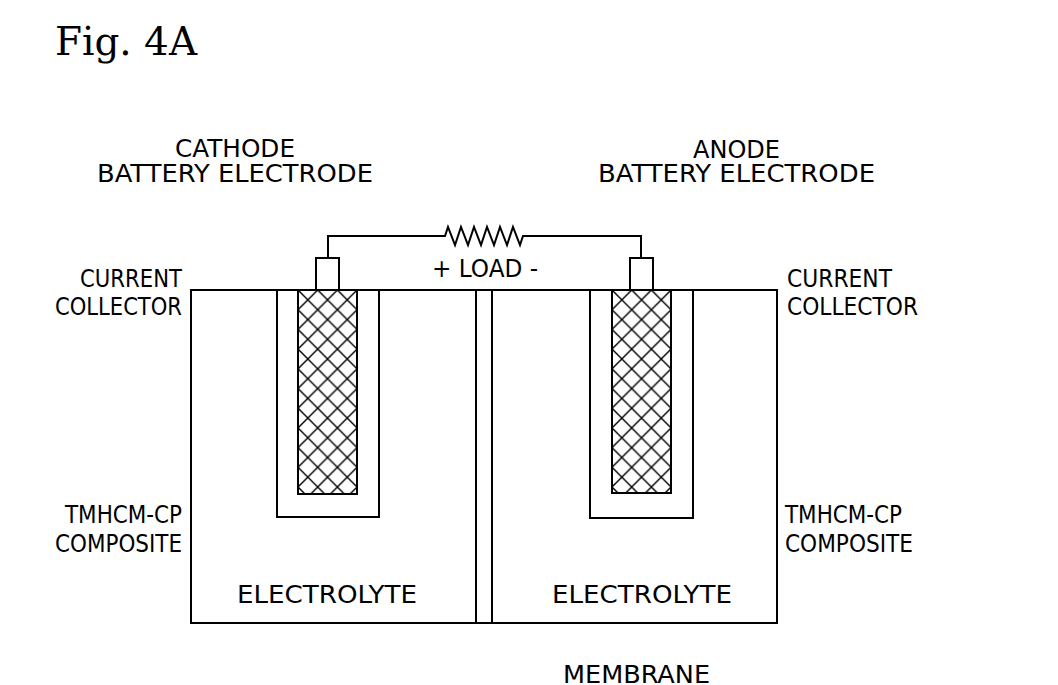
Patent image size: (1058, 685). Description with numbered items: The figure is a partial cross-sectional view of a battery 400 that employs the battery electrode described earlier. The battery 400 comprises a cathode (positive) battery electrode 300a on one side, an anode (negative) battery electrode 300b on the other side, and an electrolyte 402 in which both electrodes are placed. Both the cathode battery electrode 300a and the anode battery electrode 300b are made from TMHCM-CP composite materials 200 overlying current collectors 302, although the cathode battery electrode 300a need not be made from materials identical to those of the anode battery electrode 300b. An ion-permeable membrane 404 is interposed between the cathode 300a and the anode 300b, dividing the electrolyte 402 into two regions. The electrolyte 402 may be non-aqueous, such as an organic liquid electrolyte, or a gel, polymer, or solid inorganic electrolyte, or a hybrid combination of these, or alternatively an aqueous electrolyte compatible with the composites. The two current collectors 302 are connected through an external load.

The battery 400 is at (223, 119).
The cathode battery electrode 300a is at (249, 239).
The anode battery electrode 300b is at (721, 236).
The current collector 302 is at (320, 399).
The TMHCM-CP composite material 200 is at (287, 439).
The electrolyte 402 is at (347, 578).
The ion-permeable membrane 404 is at (485, 616).